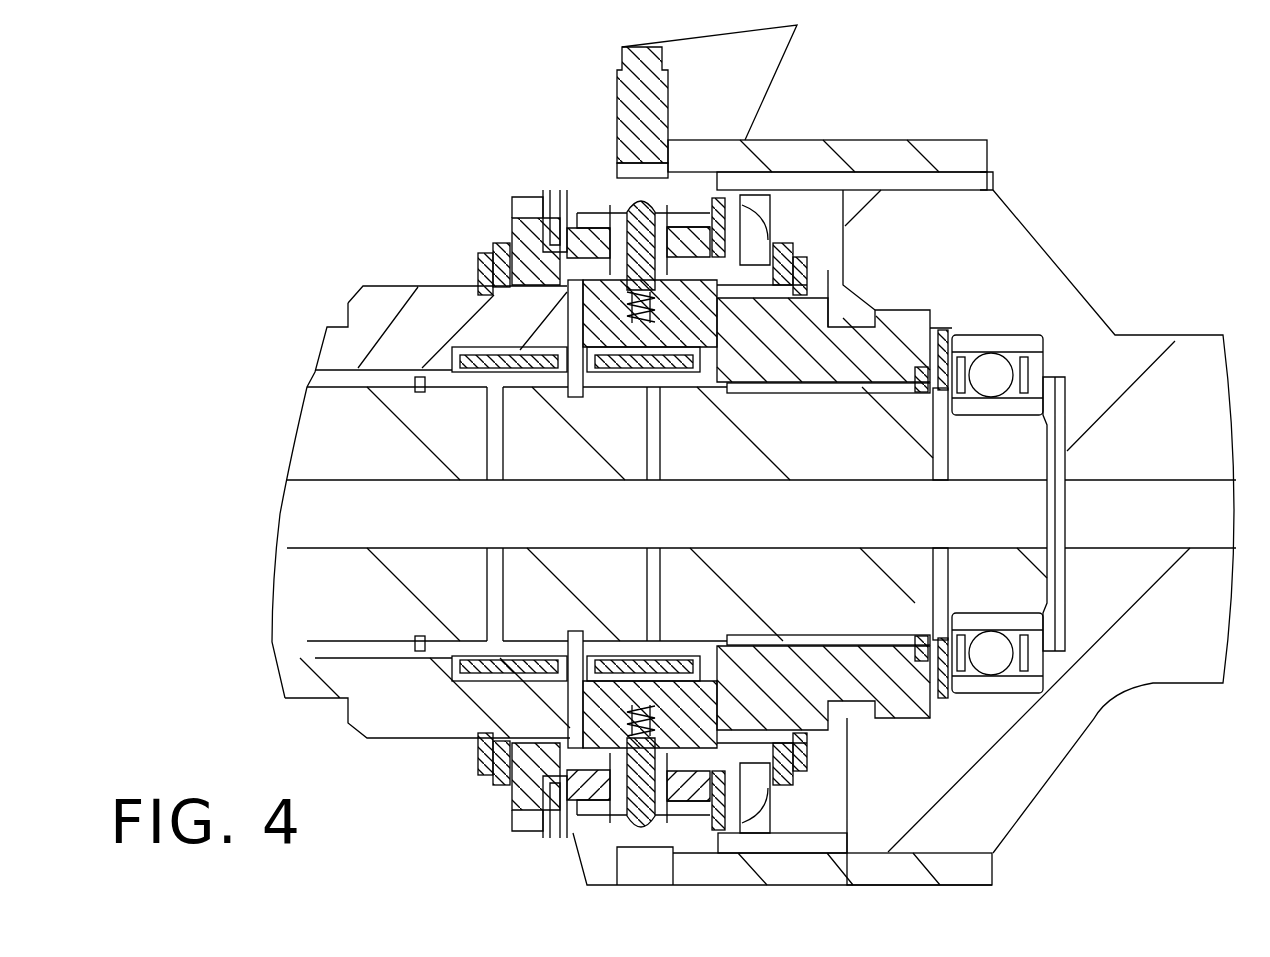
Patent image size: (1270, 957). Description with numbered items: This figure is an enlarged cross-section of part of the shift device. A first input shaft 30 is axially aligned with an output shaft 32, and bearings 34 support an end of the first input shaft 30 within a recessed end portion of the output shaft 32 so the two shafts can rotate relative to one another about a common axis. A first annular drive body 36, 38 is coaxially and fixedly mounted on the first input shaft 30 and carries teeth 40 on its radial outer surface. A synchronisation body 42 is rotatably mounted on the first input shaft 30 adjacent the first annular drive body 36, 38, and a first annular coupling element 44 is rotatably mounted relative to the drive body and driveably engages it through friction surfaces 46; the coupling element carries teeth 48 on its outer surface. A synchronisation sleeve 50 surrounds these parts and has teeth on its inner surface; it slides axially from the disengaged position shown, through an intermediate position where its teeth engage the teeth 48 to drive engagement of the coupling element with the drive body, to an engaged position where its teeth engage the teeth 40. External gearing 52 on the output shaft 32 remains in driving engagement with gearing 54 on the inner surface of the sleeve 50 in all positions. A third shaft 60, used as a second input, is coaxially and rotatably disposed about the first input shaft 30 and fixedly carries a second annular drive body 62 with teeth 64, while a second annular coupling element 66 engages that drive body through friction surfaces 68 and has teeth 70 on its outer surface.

The first input shaft 30 is at (307, 437).
The output shaft 32 is at (1112, 351).
The bearings 34 is at (1018, 318).
The first annular drive body 36 is at (760, 277).
The first annular drive body 38 is at (878, 350).
The teeth 40 is at (760, 210).
The synchronisation body 42 is at (733, 397).
The first annular coupling element 44 is at (733, 197).
The friction surfaces 46 is at (785, 262).
The teeth 48 is at (703, 193).
The synchronisation sleeve 50 is at (943, 152).
The external gearing 52 is at (975, 183).
The gearing 54 is at (843, 173).
The third shaft 60 is at (337, 345).
The second annular drive body 62 is at (523, 268).
The teeth 64 is at (525, 202).
The second annular coupling element 66 is at (547, 193).
The friction surfaces 68 is at (575, 268).
The teeth 70 is at (557, 193).